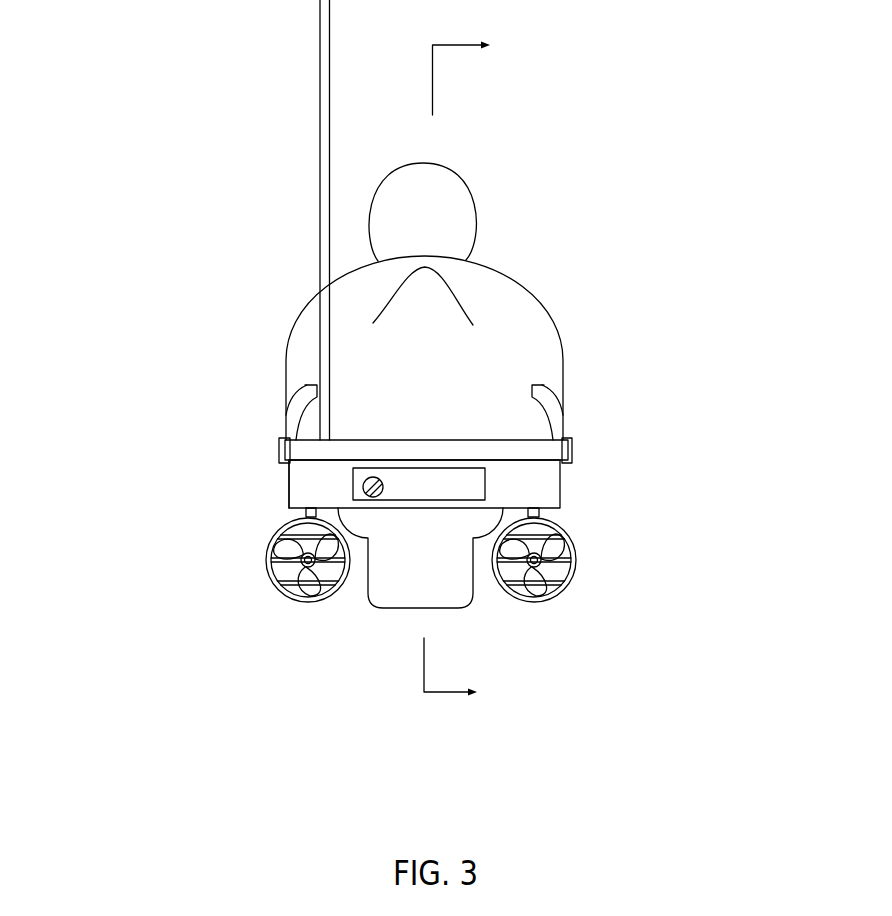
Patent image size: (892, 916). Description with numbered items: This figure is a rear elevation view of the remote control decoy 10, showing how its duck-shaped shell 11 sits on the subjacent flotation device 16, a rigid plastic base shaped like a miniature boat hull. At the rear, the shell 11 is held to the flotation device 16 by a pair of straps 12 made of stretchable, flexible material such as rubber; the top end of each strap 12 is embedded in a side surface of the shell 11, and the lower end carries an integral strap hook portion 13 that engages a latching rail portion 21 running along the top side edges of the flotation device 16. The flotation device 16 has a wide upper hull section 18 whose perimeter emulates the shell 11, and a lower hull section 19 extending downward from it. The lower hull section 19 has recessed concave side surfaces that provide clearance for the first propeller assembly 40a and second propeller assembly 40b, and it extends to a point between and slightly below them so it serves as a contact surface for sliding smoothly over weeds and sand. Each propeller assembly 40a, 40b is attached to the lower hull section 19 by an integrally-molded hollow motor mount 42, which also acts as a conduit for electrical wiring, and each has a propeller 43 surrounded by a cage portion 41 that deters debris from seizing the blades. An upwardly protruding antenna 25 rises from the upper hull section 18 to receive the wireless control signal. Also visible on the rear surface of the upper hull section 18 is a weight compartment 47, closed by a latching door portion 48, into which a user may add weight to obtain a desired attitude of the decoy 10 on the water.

The remote control decoy 10 is at (505, 123).
The shell 11 is at (487, 270).
The straps 12 is at (286, 413).
The strap hook portion 13 is at (280, 452).
The flotation device 16 is at (289, 487).
The upper hull section 18 is at (537, 488).
The lower hull section 19 is at (443, 580).
The latching rail portion 21 is at (533, 450).
The antenna 25 is at (320, 148).
The first propeller assembly 40a is at (293, 605).
The second propeller assembly 40b is at (563, 595).
The cage portion 41 is at (268, 552).
The motor mounts 42 is at (306, 515).
The propeller 43 is at (280, 573).
The weight compartment 47 is at (438, 485).
The latching door portion 48 is at (374, 497).